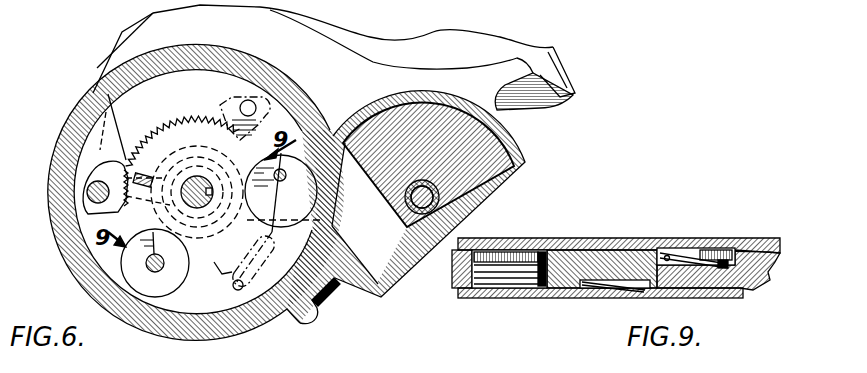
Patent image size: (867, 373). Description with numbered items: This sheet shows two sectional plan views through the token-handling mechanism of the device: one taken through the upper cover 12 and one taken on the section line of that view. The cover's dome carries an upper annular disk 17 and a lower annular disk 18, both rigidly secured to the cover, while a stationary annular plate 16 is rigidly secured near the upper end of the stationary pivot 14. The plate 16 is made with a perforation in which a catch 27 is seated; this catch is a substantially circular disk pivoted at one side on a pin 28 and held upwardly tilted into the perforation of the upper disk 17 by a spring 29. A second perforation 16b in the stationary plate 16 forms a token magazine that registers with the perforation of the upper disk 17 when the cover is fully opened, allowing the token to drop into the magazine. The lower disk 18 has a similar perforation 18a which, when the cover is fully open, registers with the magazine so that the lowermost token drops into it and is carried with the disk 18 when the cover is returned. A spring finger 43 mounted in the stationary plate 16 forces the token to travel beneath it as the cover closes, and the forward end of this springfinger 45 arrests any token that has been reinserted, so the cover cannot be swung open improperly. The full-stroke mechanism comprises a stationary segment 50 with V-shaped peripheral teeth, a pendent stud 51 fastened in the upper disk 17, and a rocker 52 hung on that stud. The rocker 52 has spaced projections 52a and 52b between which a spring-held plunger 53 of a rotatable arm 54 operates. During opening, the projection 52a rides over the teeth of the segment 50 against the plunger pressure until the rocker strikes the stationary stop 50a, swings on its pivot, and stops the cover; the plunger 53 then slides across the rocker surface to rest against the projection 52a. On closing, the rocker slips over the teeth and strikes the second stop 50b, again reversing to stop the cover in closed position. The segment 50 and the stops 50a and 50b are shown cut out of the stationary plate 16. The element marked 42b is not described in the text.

In FIG. 6, the upper cover 12 is at (373, 64).
In FIG. 6, the pivot 14 is at (205, 203).
In FIG. 6, the annular plate 16 is at (283, 206).
In FIG. 9, the annular plate 16 is at (752, 282).
In FIG. 6, the second perforation 16b is at (136, 269).
In FIG. 9, the second perforation 16b is at (527, 252).
In FIG. 9, the upper annular disk 17 is at (617, 243).
In FIG. 9, the lower annular disk 18 is at (733, 297).
In FIG. 9, the perforation 18a is at (528, 298).
In FIG. 9, the catch 27 is at (694, 250).
In FIG. 9, the pin 28 is at (666, 256).
In FIG. 9, the spring 29 is at (750, 240).
In FIG. 6, the tab 42b is at (309, 315).
In FIG. 6, the spring finger 43 is at (324, 303).
In FIG. 6, the springfinger 45 is at (238, 262).
In FIG. 9, the springfinger 45 is at (628, 290).
In FIG. 6, the stationary segment 50 is at (183, 124).
In FIG. 6, the stationary stop 50a is at (262, 140).
In FIG. 6, the second stop 50b is at (100, 217).
In FIG. 6, the pendent stud 51 is at (76, 152).
In FIG. 6, the rocker 52 is at (95, 142).
In FIG. 6, the projection 52a is at (118, 212).
In FIG. 6, the projection 52b is at (108, 94).
In FIG. 6, the spring-held plunger 53 is at (126, 164).
In FIG. 6, the rotatable arm 54 is at (157, 166).